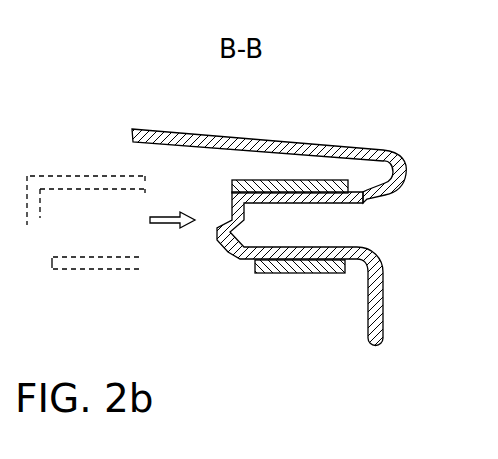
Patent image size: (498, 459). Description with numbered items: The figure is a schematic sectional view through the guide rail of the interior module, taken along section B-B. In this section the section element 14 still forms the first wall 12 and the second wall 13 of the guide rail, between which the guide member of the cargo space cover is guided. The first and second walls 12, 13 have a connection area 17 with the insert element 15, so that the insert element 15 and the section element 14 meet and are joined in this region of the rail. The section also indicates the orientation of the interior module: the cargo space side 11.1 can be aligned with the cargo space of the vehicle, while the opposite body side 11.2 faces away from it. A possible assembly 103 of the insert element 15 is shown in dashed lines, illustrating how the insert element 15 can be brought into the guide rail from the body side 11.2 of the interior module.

The cargo space side 11.1 is at (415, 301).
The body side 11.2 is at (172, 276).
The first wall 12 is at (352, 242).
The second wall 13 is at (341, 228).
The section element 14 is at (405, 178).
The insert element 15 is at (80, 176).
The connection area 17 is at (328, 190).
The assembly 103 is at (171, 216).